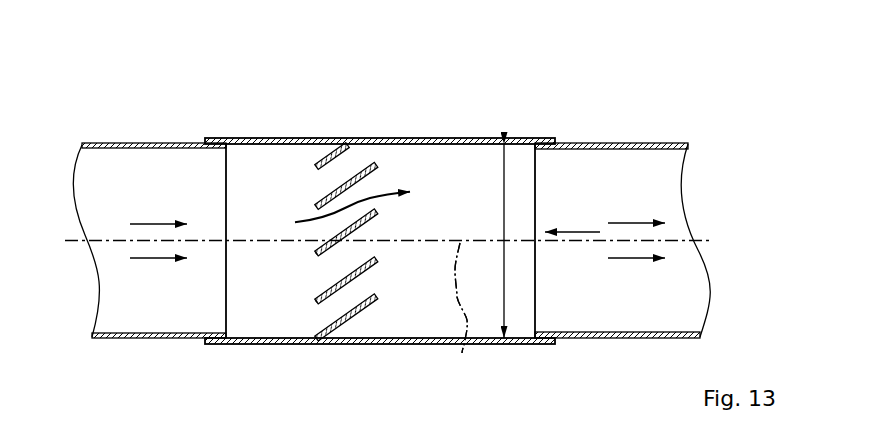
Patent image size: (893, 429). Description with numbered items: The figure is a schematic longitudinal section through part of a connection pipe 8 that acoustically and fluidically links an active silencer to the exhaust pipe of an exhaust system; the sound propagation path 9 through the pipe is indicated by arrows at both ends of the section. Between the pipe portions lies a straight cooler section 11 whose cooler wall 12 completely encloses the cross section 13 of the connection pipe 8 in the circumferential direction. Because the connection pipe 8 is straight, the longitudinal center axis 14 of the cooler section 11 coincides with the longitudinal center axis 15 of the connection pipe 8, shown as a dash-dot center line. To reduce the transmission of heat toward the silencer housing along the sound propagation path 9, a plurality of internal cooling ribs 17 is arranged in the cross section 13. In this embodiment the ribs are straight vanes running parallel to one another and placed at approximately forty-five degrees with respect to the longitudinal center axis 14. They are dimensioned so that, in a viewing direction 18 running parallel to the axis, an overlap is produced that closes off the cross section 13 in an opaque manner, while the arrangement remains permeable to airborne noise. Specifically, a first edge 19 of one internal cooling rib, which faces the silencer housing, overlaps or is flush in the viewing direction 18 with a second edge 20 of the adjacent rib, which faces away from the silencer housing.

The connection pipe 8 is at (612, 143).
The sound propagation path 9 is at (142, 258).
The cooler section 11 is at (380, 185).
The cooler wall 12 is at (417, 138).
The cross section 13 is at (502, 208).
The longitudinal center axis 14 is at (475, 320).
The longitudinal center axis 15 is at (475, 320).
The internal cooling ribs 17 is at (363, 244).
The viewing direction 18 is at (578, 232).
The first edge 19 is at (316, 254).
The second edge 20 is at (360, 278).